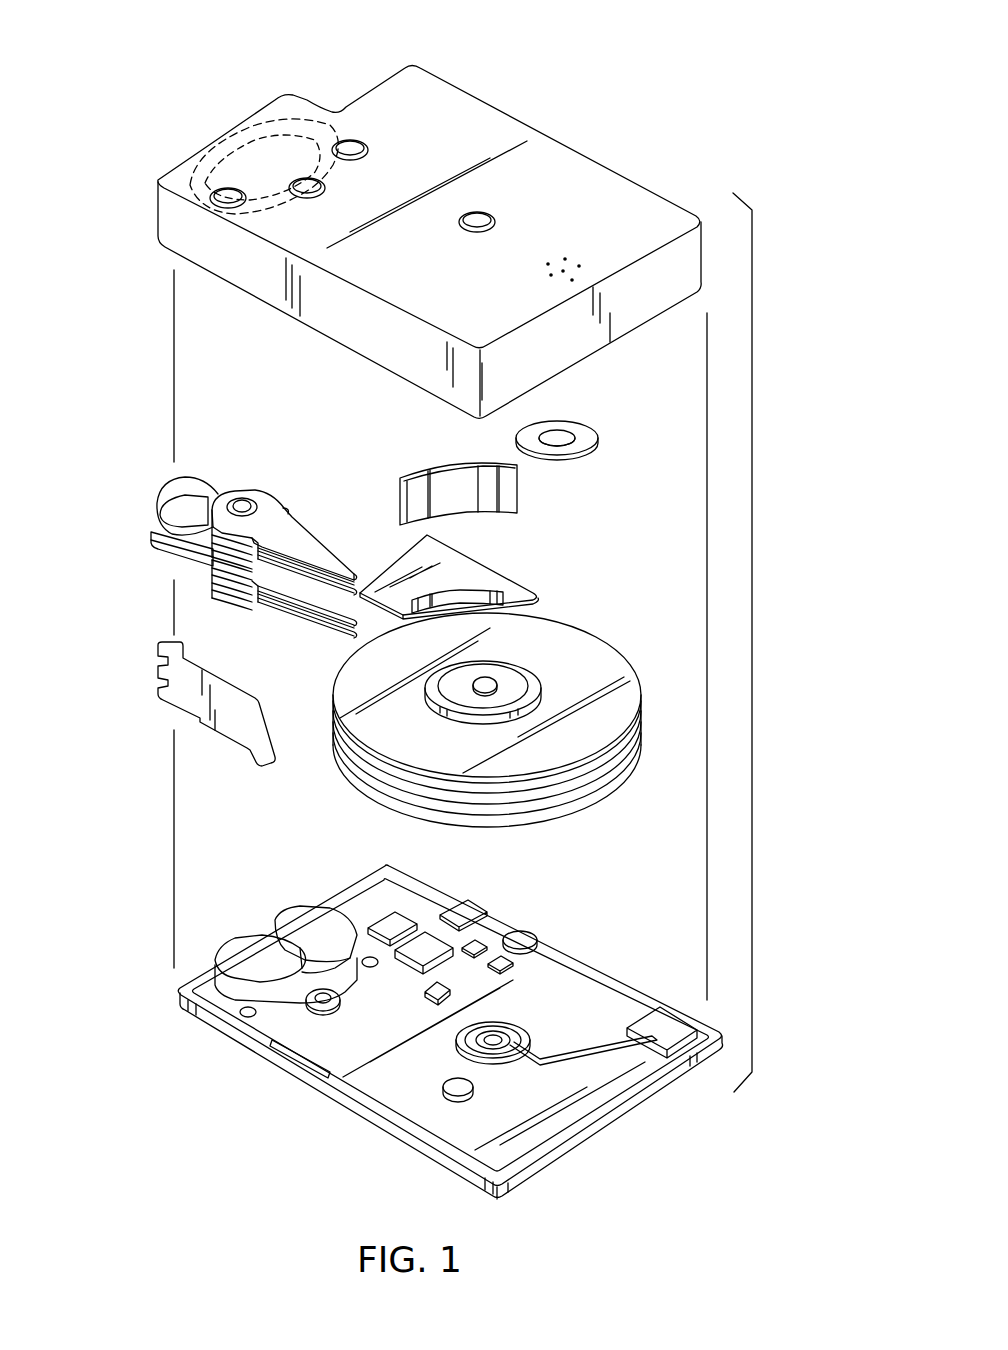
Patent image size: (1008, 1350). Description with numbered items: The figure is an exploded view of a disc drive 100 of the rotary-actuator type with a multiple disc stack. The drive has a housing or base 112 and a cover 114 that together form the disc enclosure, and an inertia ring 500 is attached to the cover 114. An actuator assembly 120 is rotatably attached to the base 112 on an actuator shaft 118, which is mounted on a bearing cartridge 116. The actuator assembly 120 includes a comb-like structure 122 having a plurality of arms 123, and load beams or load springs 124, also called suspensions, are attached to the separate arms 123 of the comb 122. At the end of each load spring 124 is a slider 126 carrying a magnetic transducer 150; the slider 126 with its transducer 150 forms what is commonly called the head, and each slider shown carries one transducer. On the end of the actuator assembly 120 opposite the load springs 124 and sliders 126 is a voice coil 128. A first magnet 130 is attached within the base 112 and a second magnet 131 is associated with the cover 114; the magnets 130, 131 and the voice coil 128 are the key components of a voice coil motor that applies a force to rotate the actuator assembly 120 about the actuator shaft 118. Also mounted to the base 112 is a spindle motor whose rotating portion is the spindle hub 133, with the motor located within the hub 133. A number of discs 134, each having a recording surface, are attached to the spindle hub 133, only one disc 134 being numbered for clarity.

The disc drive 100 is at (575, 34).
The base 112 is at (603, 1010).
The cover 114 is at (572, 191).
The bearing cartridge 116 is at (313, 1008).
The actuator shaft 118 is at (240, 487).
The actuator assembly 120 is at (160, 552).
The comb-like structure 122 is at (292, 618).
The arms 123 is at (288, 513).
The load springs 124 is at (307, 540).
The slider 126 is at (353, 570).
The voice coil 128 is at (155, 495).
The first magnet 130 is at (268, 123).
The second magnet 131 is at (245, 960).
The spindle hub 133 is at (487, 680).
The discs 134 is at (598, 672).
The magnetic transducer 150 is at (360, 577).
The inertia ring 500 is at (577, 427).